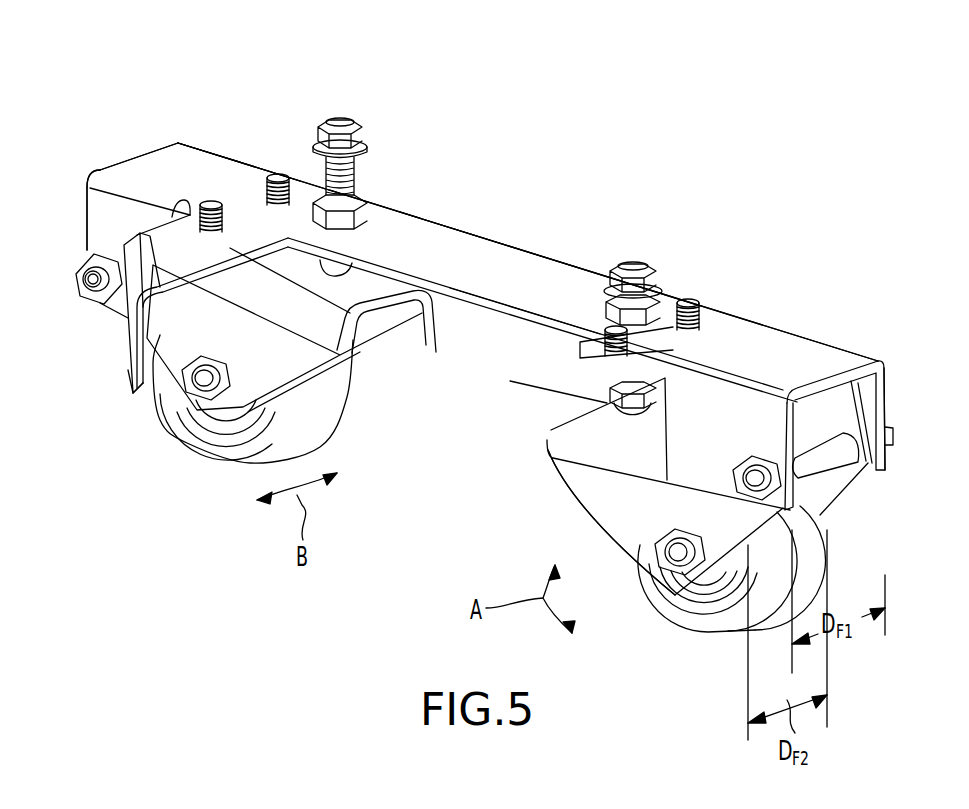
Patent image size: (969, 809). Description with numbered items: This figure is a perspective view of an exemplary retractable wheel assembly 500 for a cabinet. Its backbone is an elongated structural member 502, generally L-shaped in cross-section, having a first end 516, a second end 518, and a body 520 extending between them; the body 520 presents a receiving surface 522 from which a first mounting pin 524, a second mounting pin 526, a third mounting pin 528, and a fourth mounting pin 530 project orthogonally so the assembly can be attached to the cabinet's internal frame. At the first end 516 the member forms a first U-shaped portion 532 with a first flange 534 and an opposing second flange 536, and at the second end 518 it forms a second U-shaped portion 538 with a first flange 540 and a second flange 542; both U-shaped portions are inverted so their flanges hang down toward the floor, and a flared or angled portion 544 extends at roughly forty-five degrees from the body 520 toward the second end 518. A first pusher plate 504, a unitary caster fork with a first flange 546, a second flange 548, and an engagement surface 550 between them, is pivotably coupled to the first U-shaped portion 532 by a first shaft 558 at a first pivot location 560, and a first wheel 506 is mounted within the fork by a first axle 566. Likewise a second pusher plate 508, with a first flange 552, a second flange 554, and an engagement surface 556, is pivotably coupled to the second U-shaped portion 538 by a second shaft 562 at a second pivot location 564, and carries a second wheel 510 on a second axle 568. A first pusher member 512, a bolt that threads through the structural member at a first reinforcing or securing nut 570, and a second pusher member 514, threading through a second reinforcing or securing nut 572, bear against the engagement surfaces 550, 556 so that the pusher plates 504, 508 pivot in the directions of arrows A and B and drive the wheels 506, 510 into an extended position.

The retractable wheel assembly 500 is at (729, 92).
The elongated structural member 502 is at (443, 224).
The first pusher plate 504 is at (625, 540).
The first wheel 506 is at (710, 638).
The second pusher plate 508 is at (372, 352).
The second wheel 510 is at (352, 422).
The first pusher member 512 is at (657, 264).
The second pusher member 514 is at (345, 118).
The first end 516 is at (848, 347).
The second end 518 is at (181, 140).
The body 520 is at (543, 250).
The receiving surface 522 is at (473, 263).
The first mounting pin 524 is at (692, 298).
The second mounting pin 526 is at (608, 348).
The third mounting pin 528 is at (280, 175).
The fourth mounting pin 530 is at (212, 202).
The first U-shaped portion 532 is at (892, 390).
The first flange 534 is at (887, 413).
The second flange 536 is at (840, 470).
The second U-shaped portion 538 is at (88, 186).
The first flange 540 is at (190, 170).
The second flange 542 is at (86, 222).
The flared or angled portion 544 is at (123, 337).
The first flange 546 is at (598, 513).
The second flange 548 is at (836, 540).
The engagement surface 550 is at (575, 421).
The first flange 552 is at (163, 405).
The second flange 554 is at (400, 345).
The engagement surface 556 is at (386, 289).
The first shaft 558 is at (862, 452).
The first pivot location 560 is at (746, 476).
The second shaft 562 is at (84, 284).
The second pivot location 564 is at (88, 292).
The first axle 566 is at (668, 614).
The second axle 568 is at (202, 455).
The first reinforcing or securing nut 570 is at (610, 290).
The second reinforcing or securing nut 572 is at (378, 205).